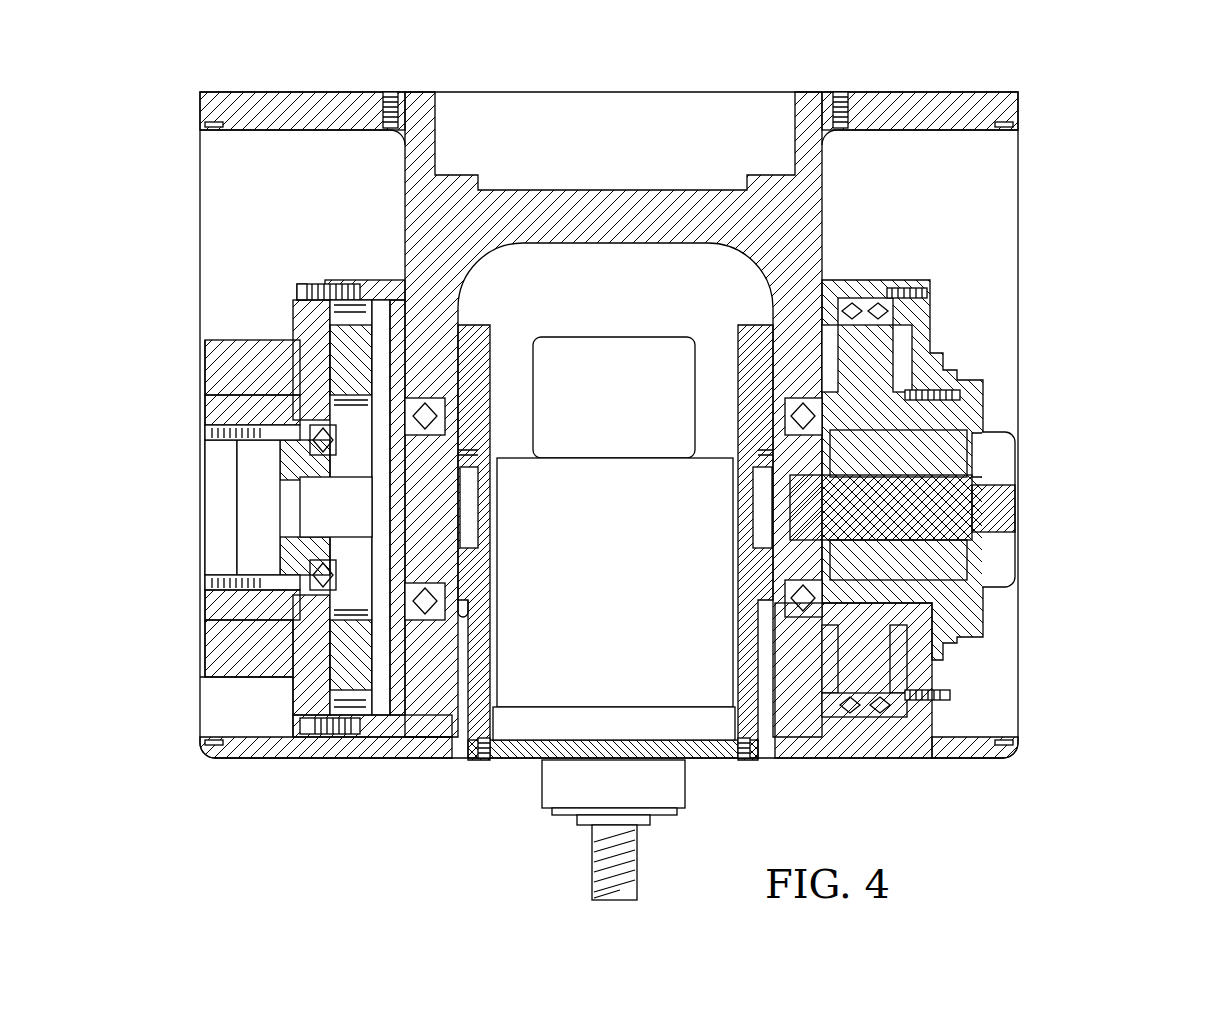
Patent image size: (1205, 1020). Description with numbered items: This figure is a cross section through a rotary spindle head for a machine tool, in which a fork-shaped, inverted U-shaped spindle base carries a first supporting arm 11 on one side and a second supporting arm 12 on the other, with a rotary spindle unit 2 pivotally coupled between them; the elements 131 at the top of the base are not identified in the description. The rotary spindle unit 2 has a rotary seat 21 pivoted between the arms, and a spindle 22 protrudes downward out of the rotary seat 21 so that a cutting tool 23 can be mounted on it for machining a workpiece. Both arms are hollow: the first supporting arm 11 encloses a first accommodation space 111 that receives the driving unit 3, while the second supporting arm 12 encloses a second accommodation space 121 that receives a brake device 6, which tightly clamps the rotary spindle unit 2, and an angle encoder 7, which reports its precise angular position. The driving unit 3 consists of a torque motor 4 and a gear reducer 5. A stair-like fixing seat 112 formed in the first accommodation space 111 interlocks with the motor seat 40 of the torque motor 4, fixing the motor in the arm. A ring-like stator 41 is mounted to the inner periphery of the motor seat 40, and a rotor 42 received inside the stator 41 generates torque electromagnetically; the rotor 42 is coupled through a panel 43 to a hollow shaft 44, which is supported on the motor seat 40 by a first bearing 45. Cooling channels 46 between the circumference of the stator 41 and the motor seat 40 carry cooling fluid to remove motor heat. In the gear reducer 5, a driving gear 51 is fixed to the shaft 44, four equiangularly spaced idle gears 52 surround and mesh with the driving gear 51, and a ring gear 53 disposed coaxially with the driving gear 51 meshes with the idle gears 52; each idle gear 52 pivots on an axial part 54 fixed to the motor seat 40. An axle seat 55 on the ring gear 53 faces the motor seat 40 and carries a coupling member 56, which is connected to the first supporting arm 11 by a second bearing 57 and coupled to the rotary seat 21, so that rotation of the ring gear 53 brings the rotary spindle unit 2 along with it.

The rotary spindle unit 2 is at (588, 612).
The rotary seat 21 is at (463, 618).
The spindle 22 is at (625, 740).
The cutting tool 23 is at (628, 862).
The driving unit 3 is at (344, 453).
The torque motor 4 is at (230, 690).
The gear reducer 5 is at (392, 472).
The brake device 6 is at (883, 262).
The angle encoder 7 is at (1003, 410).
The first supporting arm 11 is at (348, 752).
The second supporting arm 12 is at (920, 762).
The motor seat 40 is at (203, 508).
The ring-like stator 41 is at (213, 374).
The rotor 42 is at (247, 405).
The panel 43 is at (215, 585).
The hollow shaft 44 is at (280, 452).
The first bearing 45 is at (310, 468).
The cooling channels 46 is at (272, 650).
The driving gear 51 is at (350, 478).
The idle gear 52 is at (445, 320).
The ring gear 53 is at (352, 283).
The axial part 54 is at (307, 342).
The axle seat 55 is at (395, 366).
The coupling member 56 is at (425, 493).
The second bearing 57 is at (430, 430).
The first accommodation space 111 is at (287, 137).
The stair-like fixing seat 112 is at (390, 282).
The second accommodation space 121 is at (917, 138).
The fastening screw 131 is at (388, 92).